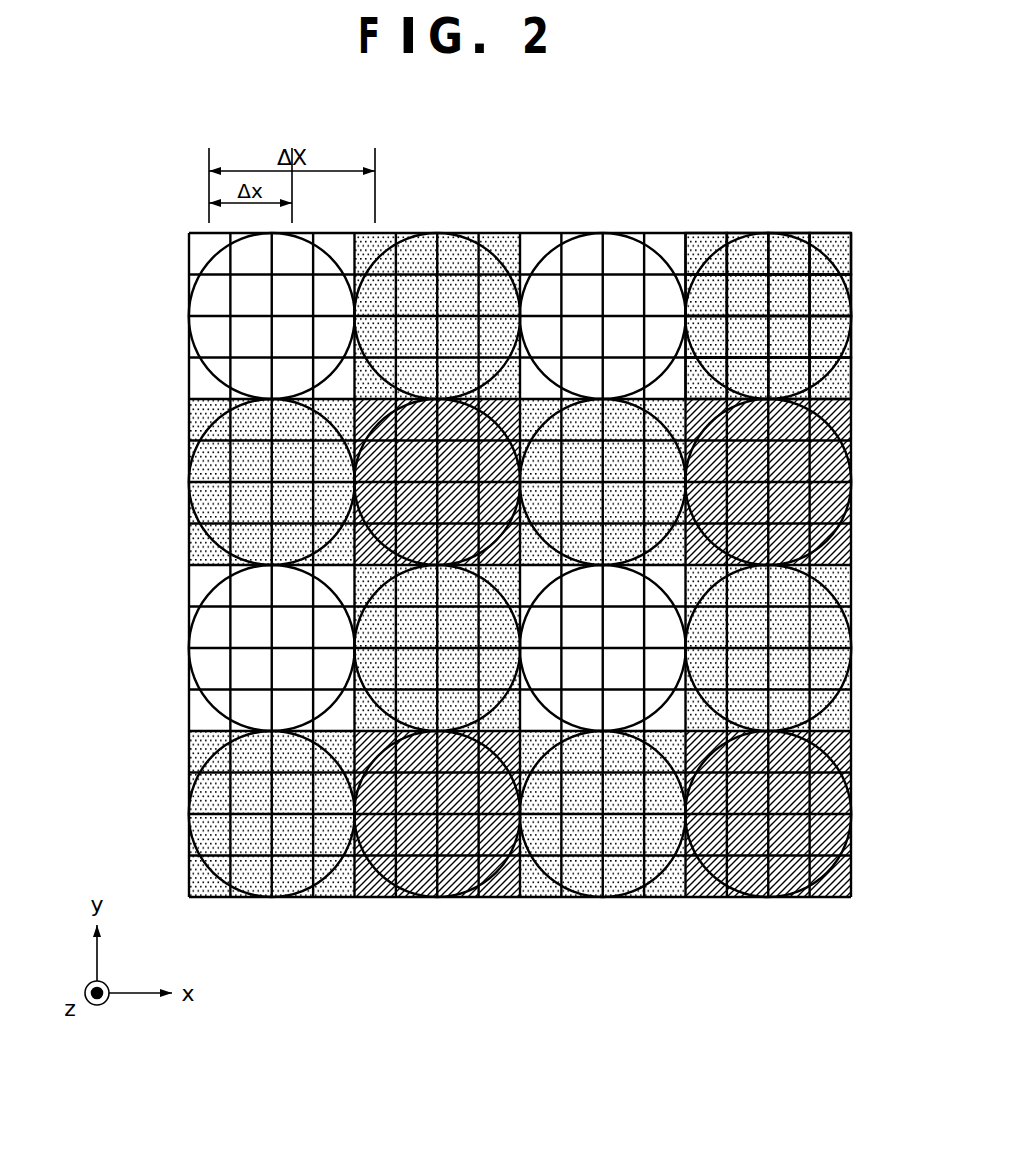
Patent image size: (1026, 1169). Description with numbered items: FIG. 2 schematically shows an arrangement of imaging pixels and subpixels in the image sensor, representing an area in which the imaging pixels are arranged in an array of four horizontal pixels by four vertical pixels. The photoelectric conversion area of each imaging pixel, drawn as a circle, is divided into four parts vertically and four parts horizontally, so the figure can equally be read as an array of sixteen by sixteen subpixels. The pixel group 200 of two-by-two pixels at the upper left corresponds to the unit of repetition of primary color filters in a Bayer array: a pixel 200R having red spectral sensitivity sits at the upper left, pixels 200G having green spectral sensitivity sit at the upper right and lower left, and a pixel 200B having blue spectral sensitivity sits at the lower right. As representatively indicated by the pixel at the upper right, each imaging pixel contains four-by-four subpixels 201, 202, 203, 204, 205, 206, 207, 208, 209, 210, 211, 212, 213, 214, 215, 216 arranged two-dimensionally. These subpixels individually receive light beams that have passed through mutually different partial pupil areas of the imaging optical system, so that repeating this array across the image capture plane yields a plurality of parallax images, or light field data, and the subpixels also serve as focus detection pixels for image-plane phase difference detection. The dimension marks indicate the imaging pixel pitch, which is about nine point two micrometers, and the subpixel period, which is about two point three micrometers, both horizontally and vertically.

The pixel group 200 is at (88, 312).
The pixel having R spectral sensitivity 200R is at (250, 298).
The pixel having G spectral sensitivity 200G is at (250, 422).
The pixel having B spectral sensitivity 200B is at (377, 503).
The subpixel 201 is at (715, 267).
The subpixel 202 is at (753, 253).
The subpixel 203 is at (800, 263).
The subpixel 204 is at (822, 265).
The subpixel 205 is at (712, 298).
The subpixel 206 is at (748, 293).
The subpixel 207 is at (788, 297).
The subpixel 208 is at (833, 288).
The subpixel 209 is at (712, 338).
The subpixel 210 is at (753, 333).
The subpixel 211 is at (793, 340).
The subpixel 212 is at (828, 327).
The subpixel 213 is at (713, 368).
The subpixel 214 is at (757, 383).
The subpixel 215 is at (792, 373).
The subpixel 216 is at (818, 365).